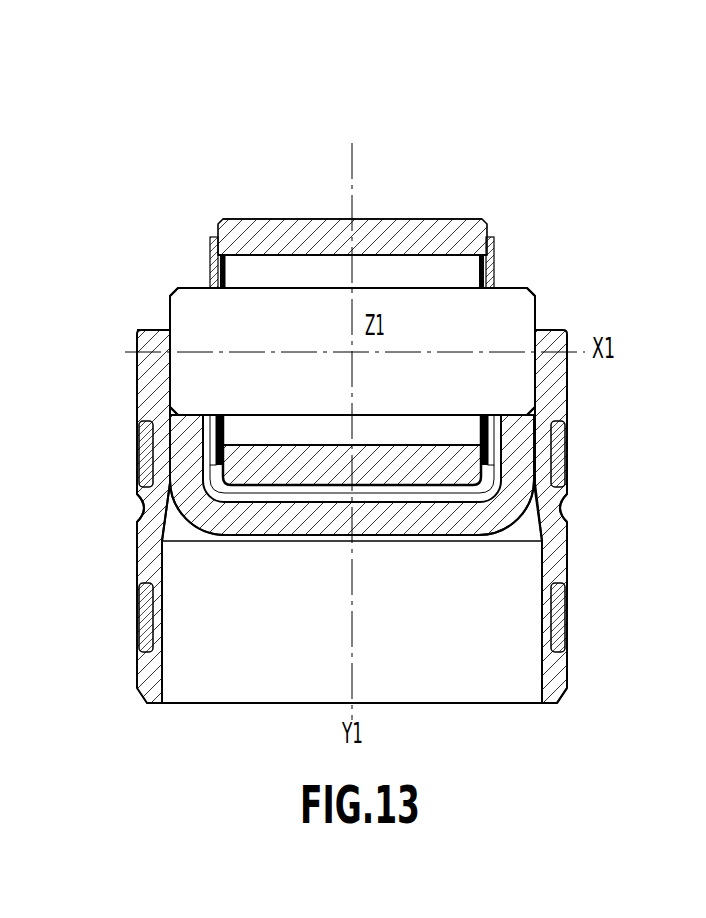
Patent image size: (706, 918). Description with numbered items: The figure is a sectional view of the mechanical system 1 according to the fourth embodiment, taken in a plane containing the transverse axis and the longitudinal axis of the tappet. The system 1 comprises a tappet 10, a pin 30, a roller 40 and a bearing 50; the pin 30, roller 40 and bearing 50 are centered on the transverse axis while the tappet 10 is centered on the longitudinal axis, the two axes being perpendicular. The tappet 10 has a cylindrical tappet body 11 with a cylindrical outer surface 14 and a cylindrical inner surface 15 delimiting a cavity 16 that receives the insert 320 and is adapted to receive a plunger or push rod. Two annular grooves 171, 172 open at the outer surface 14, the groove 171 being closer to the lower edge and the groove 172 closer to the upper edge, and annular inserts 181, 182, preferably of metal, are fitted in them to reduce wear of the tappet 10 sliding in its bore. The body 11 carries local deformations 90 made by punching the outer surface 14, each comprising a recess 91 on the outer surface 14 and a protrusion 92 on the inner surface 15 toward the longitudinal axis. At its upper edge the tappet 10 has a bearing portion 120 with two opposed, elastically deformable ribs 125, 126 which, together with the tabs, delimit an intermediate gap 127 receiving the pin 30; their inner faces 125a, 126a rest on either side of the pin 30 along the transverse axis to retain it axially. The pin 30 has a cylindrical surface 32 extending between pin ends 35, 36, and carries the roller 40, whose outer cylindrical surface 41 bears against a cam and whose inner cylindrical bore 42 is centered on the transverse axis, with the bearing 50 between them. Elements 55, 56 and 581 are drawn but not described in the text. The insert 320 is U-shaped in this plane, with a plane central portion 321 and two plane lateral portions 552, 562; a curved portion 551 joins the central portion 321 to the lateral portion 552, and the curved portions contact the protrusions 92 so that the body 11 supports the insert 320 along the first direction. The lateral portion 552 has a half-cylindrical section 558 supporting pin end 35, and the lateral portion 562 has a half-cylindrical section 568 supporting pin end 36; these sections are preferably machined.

The mechanical system 1 is at (145, 232).
The tappet 10 is at (187, 718).
The tappet body 11 is at (560, 686).
The outer surface 14 is at (568, 670).
The inner surface 15 is at (540, 677).
The cavity 16 is at (420, 672).
The pin 30 is at (265, 308).
The cylindrical surface 32 is at (300, 287).
The pin end 35 is at (177, 303).
The pin end 36 is at (533, 293).
The roller 40 is at (372, 240).
The outer cylindrical surface 41 is at (405, 217).
The inner cylindrical bore 42 is at (420, 258).
The bearing 50 is at (388, 440).
The spacer 55 is at (207, 245).
The spacer 56 is at (495, 240).
The local deformation 90 is at (122, 508).
The recess 91 is at (136, 514).
The protrusion 92 is at (175, 522).
The bearing portion 120 is at (563, 273).
The rib 125 is at (137, 328).
The inner face 125a is at (173, 348).
The rib 126 is at (555, 333).
The inner face 126a is at (531, 348).
The intermediate gap 127 is at (452, 168).
The annular groove 171 is at (146, 633).
The annular groove 172 is at (137, 441).
The annular insert 181 is at (565, 613).
The annular insert 182 is at (566, 447).
The insert 320 is at (274, 556).
The central portion 321 is at (300, 522).
The curved portion 551 is at (207, 510).
The lateral portion 552 is at (183, 458).
The half-cylindrical section 558 is at (190, 413).
The lateral portion 562 is at (512, 468).
The half-cylindrical section 568 is at (515, 413).
The curved surface 581 is at (498, 520).